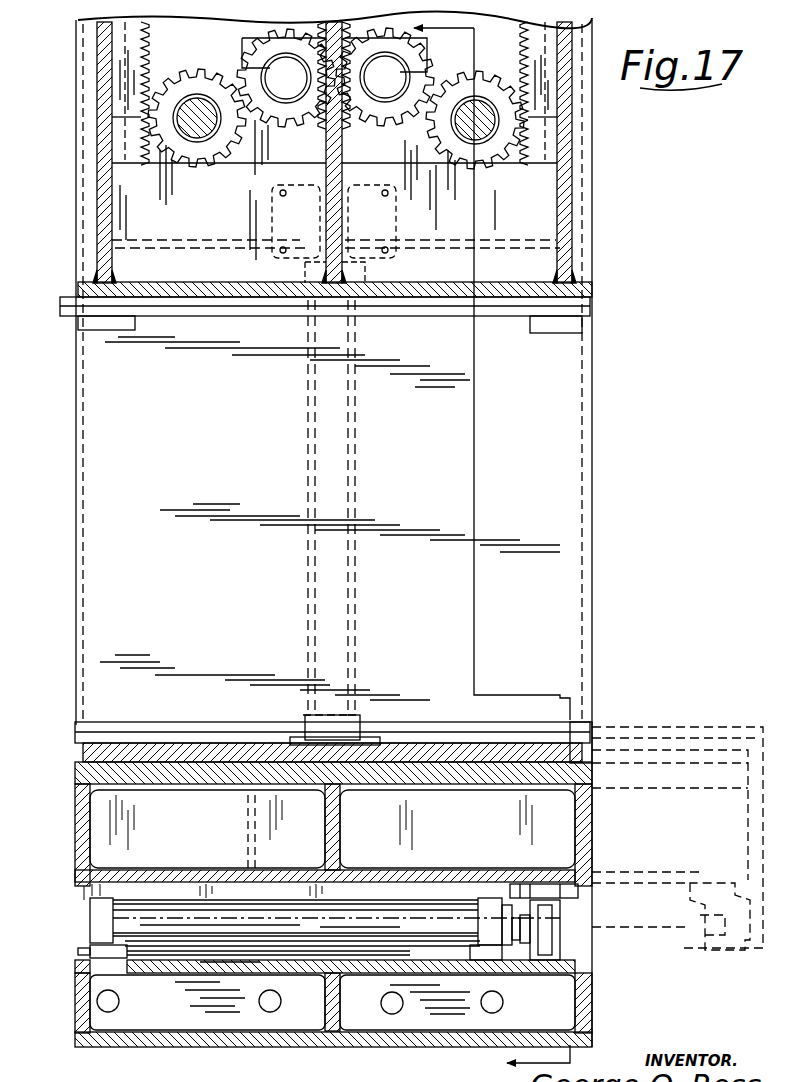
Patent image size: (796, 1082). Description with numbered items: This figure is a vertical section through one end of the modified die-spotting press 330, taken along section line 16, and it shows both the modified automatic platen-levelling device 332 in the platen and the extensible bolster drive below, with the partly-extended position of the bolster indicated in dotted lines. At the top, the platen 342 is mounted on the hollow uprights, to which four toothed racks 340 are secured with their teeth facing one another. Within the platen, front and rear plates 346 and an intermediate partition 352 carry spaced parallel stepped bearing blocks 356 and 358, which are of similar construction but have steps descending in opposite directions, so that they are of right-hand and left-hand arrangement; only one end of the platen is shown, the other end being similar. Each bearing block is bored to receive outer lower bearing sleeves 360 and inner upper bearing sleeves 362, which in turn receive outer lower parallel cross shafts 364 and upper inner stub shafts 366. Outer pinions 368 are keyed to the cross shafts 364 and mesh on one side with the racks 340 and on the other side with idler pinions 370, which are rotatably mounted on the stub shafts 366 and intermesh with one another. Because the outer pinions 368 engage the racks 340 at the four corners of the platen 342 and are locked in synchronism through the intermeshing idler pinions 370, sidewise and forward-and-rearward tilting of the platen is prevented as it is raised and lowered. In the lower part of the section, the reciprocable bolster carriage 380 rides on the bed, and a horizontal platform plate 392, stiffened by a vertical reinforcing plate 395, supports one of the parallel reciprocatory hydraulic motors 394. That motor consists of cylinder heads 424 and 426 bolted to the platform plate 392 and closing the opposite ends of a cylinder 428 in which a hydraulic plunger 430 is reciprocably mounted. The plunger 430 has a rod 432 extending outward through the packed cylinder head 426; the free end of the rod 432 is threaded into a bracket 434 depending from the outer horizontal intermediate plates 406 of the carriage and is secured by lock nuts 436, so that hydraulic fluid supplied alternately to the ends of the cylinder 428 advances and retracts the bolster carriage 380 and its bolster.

The section line 16 is at (492, 552).
The modified die-spotting press 330 is at (600, 50).
The automatic platen-levelling device 332 is at (547, 15).
The toothed racks 340 is at (118, 34).
The platen 342 is at (580, 135).
The front and rear plates 346 is at (100, 130).
The intermediate partition 352 is at (318, 284).
The stepped bearing block 356 is at (570, 208).
The stepped bearing block 358 is at (150, 162).
The outer lower bearing sleeves 360 is at (196, 92).
The inner upper bearing sleeves 362 is at (240, 62).
The outer lower parallel cross shafts 364 is at (198, 145).
The upper inner stub shafts 366 is at (292, 95).
The outer pinions 368 is at (336, 234).
The idler pinions 370 is at (268, 128).
The bolster carriage 380 is at (70, 770).
The horizontal platform plate 392 is at (240, 975).
The reciprocatory hydraulic motors 394 is at (462, 893).
The vertical reinforcing plate 395 is at (348, 1045).
The outer horizontal intermediate plates 406 is at (415, 872).
The cylinder head 424 is at (98, 918).
The cylinder head 426 is at (495, 900).
The cylinder 428 is at (130, 898).
The hydraulic plunger 430 is at (676, 948).
The rod 432 is at (565, 935).
The bracket 434 is at (560, 912).
The lock nuts 436 is at (575, 953).